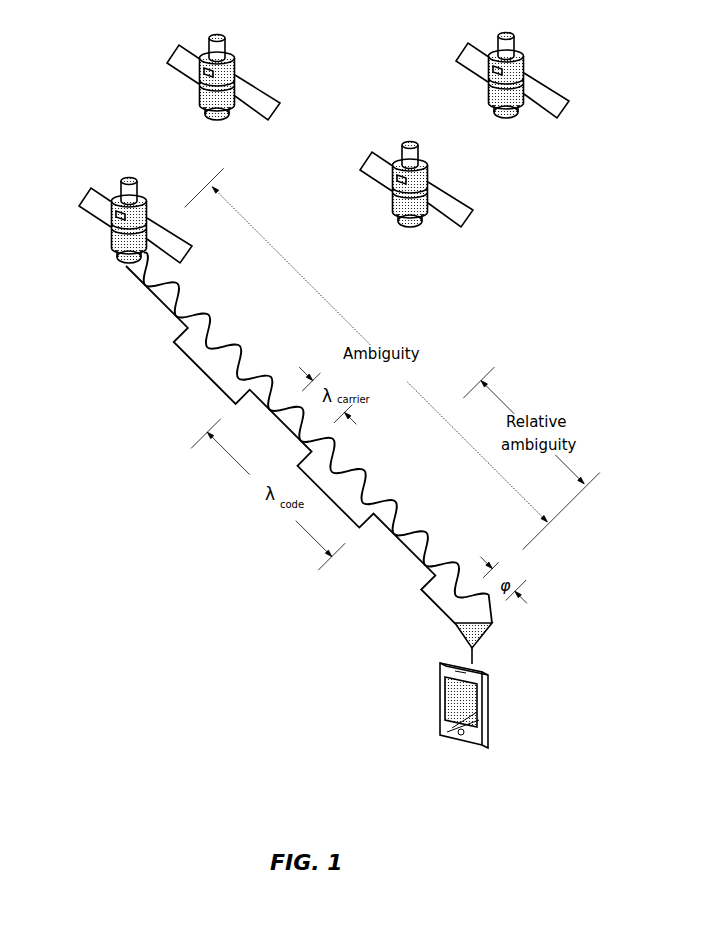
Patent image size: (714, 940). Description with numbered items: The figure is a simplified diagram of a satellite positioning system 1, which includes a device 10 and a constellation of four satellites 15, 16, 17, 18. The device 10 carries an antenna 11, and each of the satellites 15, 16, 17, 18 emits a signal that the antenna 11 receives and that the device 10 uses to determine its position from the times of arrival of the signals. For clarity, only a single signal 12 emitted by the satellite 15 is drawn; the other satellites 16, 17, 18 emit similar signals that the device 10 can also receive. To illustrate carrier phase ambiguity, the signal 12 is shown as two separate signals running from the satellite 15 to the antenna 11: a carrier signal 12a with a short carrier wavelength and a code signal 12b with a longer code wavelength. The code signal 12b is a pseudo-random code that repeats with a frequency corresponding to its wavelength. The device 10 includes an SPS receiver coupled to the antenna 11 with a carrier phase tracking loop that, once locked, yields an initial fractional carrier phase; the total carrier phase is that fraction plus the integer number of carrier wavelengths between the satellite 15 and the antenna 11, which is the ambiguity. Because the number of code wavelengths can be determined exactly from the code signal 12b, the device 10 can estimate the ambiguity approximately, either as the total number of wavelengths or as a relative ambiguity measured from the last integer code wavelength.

The satellite positioning system 1 is at (270, 697).
The device 10 is at (489, 708).
The antenna 11 is at (487, 634).
The signal 12 is at (259, 438).
The carrier signal 12a is at (210, 329).
The code signal 12b is at (172, 339).
The satellite 15 is at (80, 204).
The satellite 16 is at (170, 50).
The satellite 17 is at (360, 166).
The satellite 18 is at (460, 50).